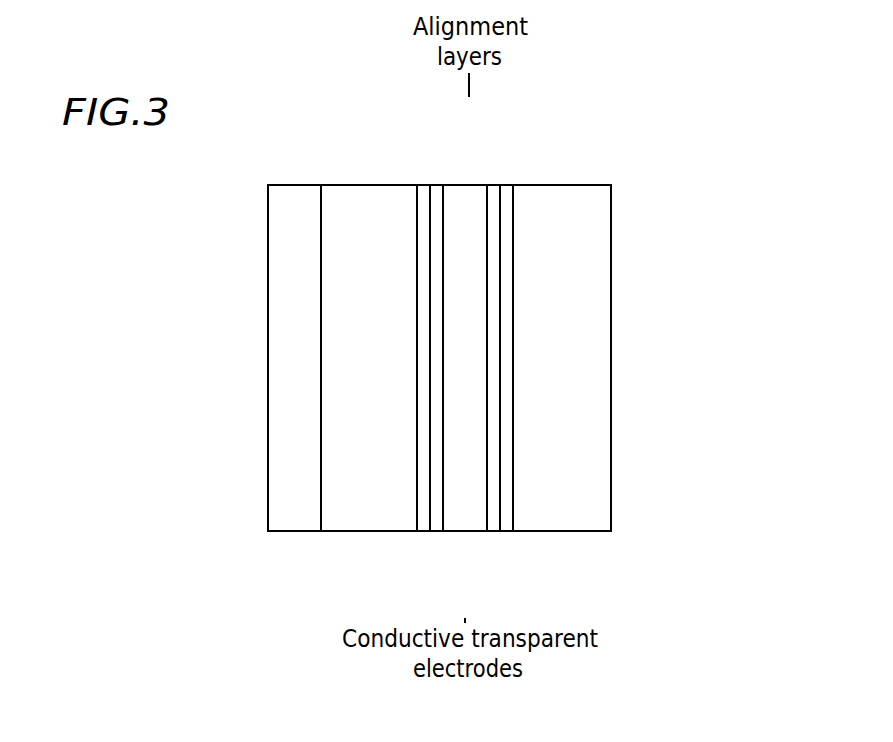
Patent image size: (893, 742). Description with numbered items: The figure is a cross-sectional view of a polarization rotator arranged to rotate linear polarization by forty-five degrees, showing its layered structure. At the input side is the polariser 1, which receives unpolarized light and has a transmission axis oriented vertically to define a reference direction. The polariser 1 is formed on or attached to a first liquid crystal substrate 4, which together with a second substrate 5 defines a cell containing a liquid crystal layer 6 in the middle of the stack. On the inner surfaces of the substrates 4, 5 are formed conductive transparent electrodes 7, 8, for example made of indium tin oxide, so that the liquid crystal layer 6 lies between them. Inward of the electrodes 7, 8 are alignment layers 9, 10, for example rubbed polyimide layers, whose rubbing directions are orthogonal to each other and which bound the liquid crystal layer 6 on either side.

The input polariser 1 is at (300, 283).
The first liquid crystal substrate 4 is at (368, 387).
The second substrate 5 is at (572, 432).
The liquid crystal layer 6 is at (467, 488).
The conductive transparent electrode 7 is at (465, 622).
The conductive transparent electrode 8 is at (465, 622).
The alignment layer 9 is at (469, 95).
The alignment layer 10 is at (469, 95).